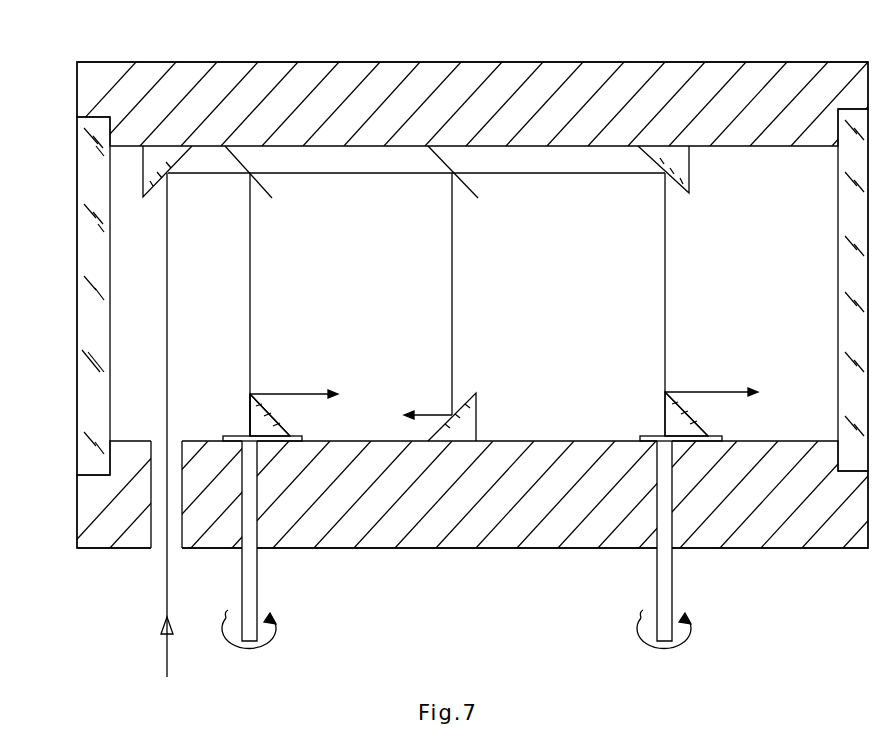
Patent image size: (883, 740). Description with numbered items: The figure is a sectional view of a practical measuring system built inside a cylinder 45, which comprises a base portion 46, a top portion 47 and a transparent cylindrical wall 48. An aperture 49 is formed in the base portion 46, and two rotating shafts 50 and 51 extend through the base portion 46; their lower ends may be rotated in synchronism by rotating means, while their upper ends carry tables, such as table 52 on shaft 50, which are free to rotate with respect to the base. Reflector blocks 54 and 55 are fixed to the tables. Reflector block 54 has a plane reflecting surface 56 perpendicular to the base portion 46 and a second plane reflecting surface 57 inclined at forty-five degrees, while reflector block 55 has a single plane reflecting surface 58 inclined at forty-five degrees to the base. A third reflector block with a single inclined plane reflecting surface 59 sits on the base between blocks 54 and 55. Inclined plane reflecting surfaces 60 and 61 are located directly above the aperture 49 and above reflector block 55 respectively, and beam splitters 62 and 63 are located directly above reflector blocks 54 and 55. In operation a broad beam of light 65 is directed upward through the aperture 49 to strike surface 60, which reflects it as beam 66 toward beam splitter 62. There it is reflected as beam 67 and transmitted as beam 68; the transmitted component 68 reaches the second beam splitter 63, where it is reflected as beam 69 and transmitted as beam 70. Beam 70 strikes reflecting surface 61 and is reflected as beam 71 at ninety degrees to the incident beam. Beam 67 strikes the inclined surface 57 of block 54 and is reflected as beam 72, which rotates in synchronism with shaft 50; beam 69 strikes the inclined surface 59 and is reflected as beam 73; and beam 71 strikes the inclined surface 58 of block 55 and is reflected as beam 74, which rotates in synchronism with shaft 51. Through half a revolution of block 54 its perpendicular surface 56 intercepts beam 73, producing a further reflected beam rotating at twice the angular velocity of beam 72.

The cylinder 45 is at (849, 56).
The base portion 46 is at (468, 548).
The top portion 47 is at (532, 62).
The transparent cylindrical wall 48 is at (77, 333).
The aperture 49 is at (175, 549).
The rotating shaft 50 is at (258, 572).
The rotating shaft 51 is at (673, 570).
The table 52 is at (305, 438).
The reflector block 54 is at (250, 412).
The reflector block 55 is at (666, 412).
The plane reflecting surface 56 is at (250, 423).
The second plane reflecting surface 57 is at (272, 418).
The plane reflecting surface 58 is at (690, 414).
The plane reflecting surface 59 is at (466, 400).
The plane reflecting surface 60 is at (143, 181).
The plane reflecting surface 61 is at (690, 162).
The beam splitter 62 is at (247, 169).
The beam splitter 63 is at (448, 163).
The broad beam of light 65 is at (168, 665).
The beam 66 is at (190, 171).
The beam 67 is at (251, 283).
The beam 68 is at (346, 171).
The beam 69 is at (453, 283).
The beam 70 is at (549, 171).
The beam 71 is at (666, 283).
The beam 72 is at (338, 394).
The beam 73 is at (415, 420).
The beam 74 is at (760, 392).